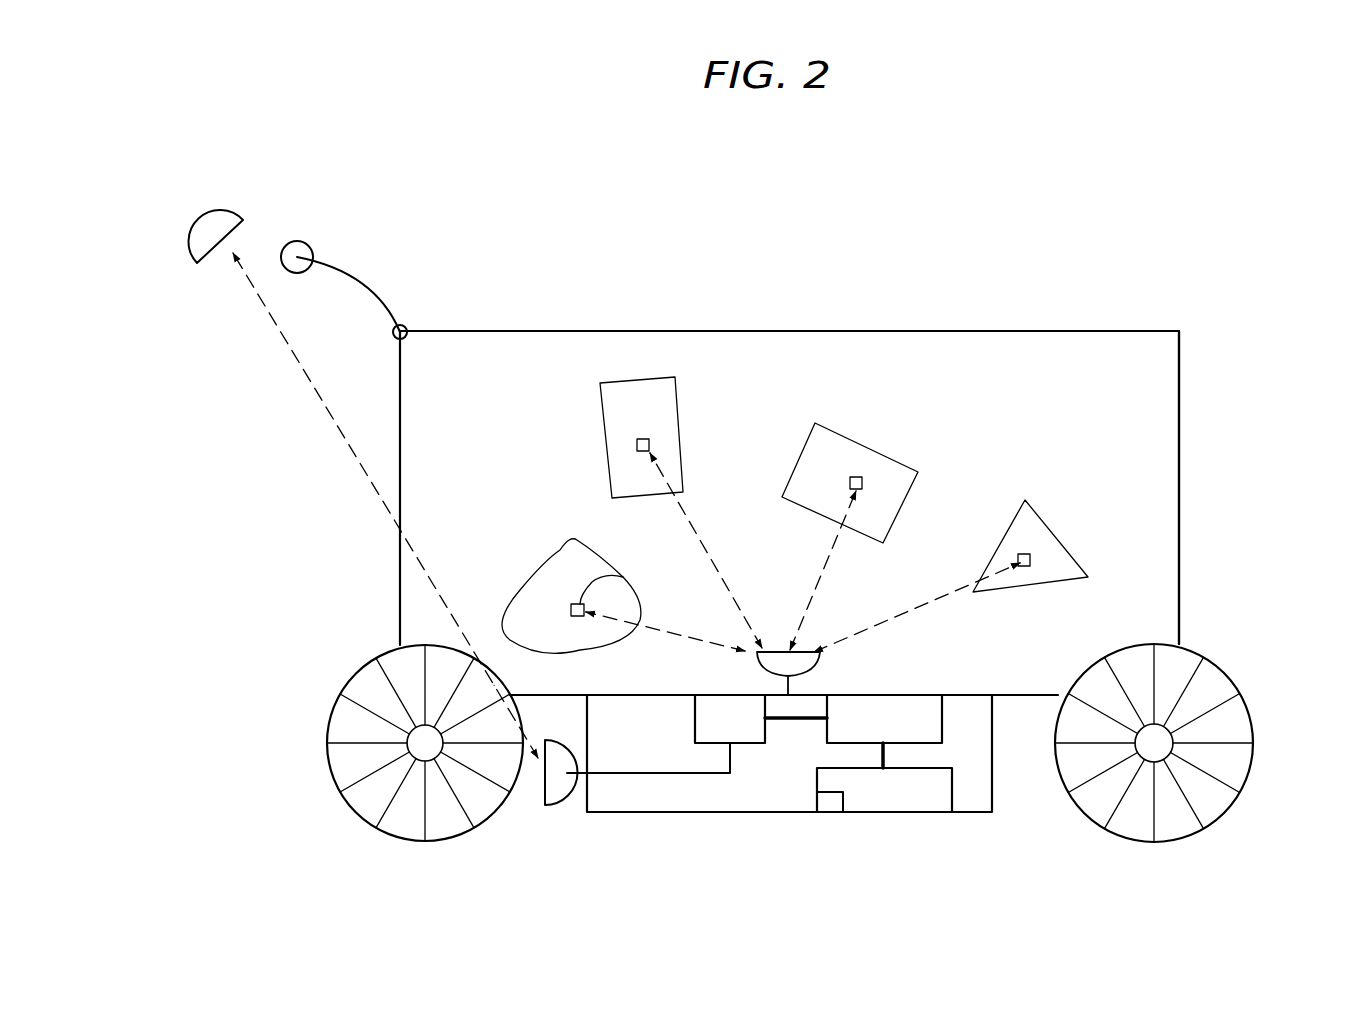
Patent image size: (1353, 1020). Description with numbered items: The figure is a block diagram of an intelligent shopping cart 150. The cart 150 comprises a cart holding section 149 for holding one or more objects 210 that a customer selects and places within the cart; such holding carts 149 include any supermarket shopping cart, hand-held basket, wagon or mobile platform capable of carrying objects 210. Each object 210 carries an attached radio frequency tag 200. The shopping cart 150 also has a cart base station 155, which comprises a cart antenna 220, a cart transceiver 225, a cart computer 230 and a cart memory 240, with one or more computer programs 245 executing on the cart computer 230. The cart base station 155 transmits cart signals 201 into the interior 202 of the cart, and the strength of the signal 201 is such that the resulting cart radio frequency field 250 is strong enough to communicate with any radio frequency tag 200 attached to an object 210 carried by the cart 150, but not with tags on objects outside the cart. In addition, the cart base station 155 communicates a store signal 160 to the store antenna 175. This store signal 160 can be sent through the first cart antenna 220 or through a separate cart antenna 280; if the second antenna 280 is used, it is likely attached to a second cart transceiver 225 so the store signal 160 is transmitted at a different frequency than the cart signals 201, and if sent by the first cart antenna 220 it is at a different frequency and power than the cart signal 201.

The cart holding section 149 is at (1148, 349).
The intelligent shopping cart 150 is at (1222, 446).
The cart base station 155 is at (637, 807).
The store signal 160 is at (275, 332).
The store antenna 175 is at (213, 220).
The radio frequency tag 200 is at (635, 443).
The cart signal 201 is at (727, 573).
The interior of the cart 202 is at (1003, 343).
The object 210 is at (617, 398).
The cart antenna 220 is at (812, 663).
The cart transceiver 225 is at (708, 695).
The cart computer 230 is at (927, 695).
The cart memory 240 is at (933, 807).
The computer program 245 is at (828, 807).
The cart radio frequency field 250 is at (820, 577).
The separate cart antenna 280 is at (543, 803).